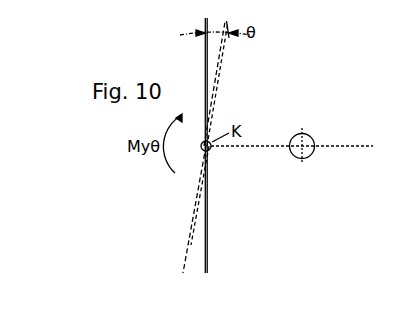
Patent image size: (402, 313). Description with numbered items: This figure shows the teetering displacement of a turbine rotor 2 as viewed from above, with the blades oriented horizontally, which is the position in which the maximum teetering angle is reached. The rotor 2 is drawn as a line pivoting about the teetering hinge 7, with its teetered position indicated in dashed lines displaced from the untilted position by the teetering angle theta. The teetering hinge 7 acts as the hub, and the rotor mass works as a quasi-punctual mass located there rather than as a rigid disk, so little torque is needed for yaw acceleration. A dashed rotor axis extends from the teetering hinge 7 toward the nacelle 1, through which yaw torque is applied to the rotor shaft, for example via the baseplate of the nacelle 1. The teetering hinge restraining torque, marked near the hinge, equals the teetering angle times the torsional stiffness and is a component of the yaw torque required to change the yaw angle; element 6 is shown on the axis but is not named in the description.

The nacelle 1 is at (338, 146).
The rotor 2 is at (205, 80).
The hub 6 is at (311, 133).
The teetering hinge 7 is at (210, 150).